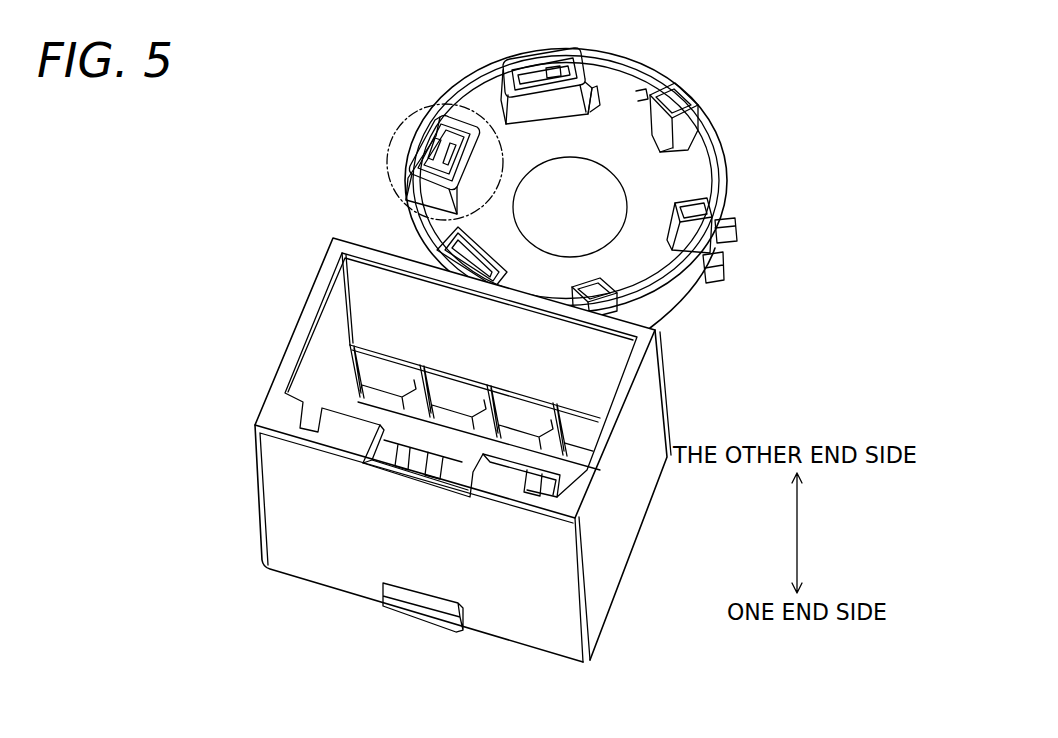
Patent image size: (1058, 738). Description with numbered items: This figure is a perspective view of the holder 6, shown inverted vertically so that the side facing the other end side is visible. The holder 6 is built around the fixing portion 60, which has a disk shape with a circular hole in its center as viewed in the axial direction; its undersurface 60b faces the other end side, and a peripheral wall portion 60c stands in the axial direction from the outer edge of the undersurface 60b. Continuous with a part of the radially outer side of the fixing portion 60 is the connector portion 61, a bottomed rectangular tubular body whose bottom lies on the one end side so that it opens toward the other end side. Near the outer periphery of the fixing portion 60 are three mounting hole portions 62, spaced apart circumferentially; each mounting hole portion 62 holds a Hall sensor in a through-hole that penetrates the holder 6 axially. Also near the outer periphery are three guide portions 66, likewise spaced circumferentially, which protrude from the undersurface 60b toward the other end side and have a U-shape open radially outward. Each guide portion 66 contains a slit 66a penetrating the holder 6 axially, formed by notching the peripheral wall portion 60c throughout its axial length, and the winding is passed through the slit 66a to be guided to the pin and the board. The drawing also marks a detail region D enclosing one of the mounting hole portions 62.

The holder 6 is at (286, 84).
The fixing portion 60 is at (461, 86).
The undersurface 60b is at (594, 153).
The peripheral wall portion 60c is at (685, 297).
The connector portion 61 is at (284, 317).
The mounting hole portion 62 is at (584, 44).
The guide portion 66 is at (693, 86).
The slit 66a is at (727, 213).
The detail region D is at (385, 180).